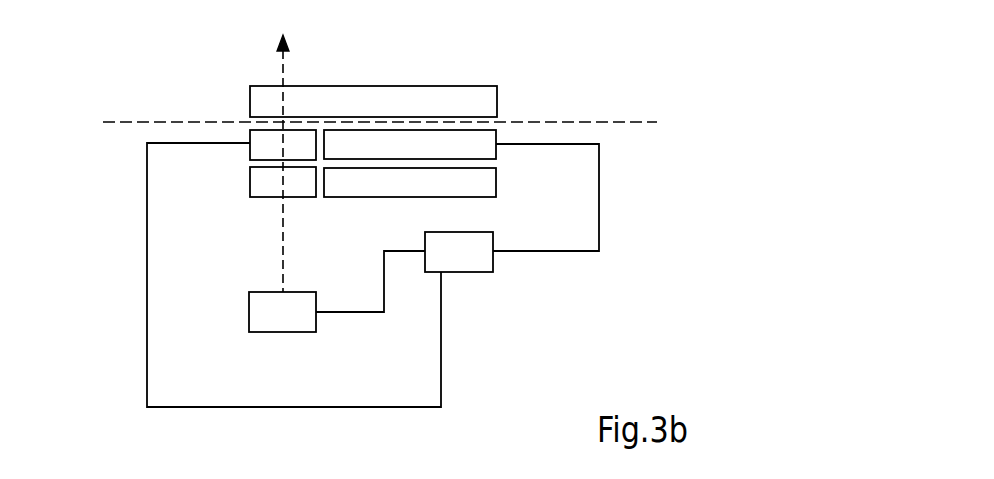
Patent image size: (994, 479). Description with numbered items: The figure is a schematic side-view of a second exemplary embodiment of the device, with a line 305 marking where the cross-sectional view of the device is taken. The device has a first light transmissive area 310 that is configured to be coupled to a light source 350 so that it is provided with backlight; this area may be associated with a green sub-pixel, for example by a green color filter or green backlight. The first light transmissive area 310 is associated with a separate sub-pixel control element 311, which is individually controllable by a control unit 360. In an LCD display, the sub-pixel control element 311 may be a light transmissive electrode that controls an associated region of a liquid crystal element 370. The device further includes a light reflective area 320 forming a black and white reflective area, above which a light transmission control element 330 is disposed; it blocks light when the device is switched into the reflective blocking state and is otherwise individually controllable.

The line 305 is at (359, 124).
The first light transmissive area 310 is at (250, 190).
The sub-pixel control element 311 is at (250, 150).
The light reflective area 320 is at (497, 190).
The light transmission control element 330 is at (497, 151).
The light source 350 is at (302, 333).
The control unit 360 is at (478, 273).
The liquid crystal element 370 is at (497, 100).